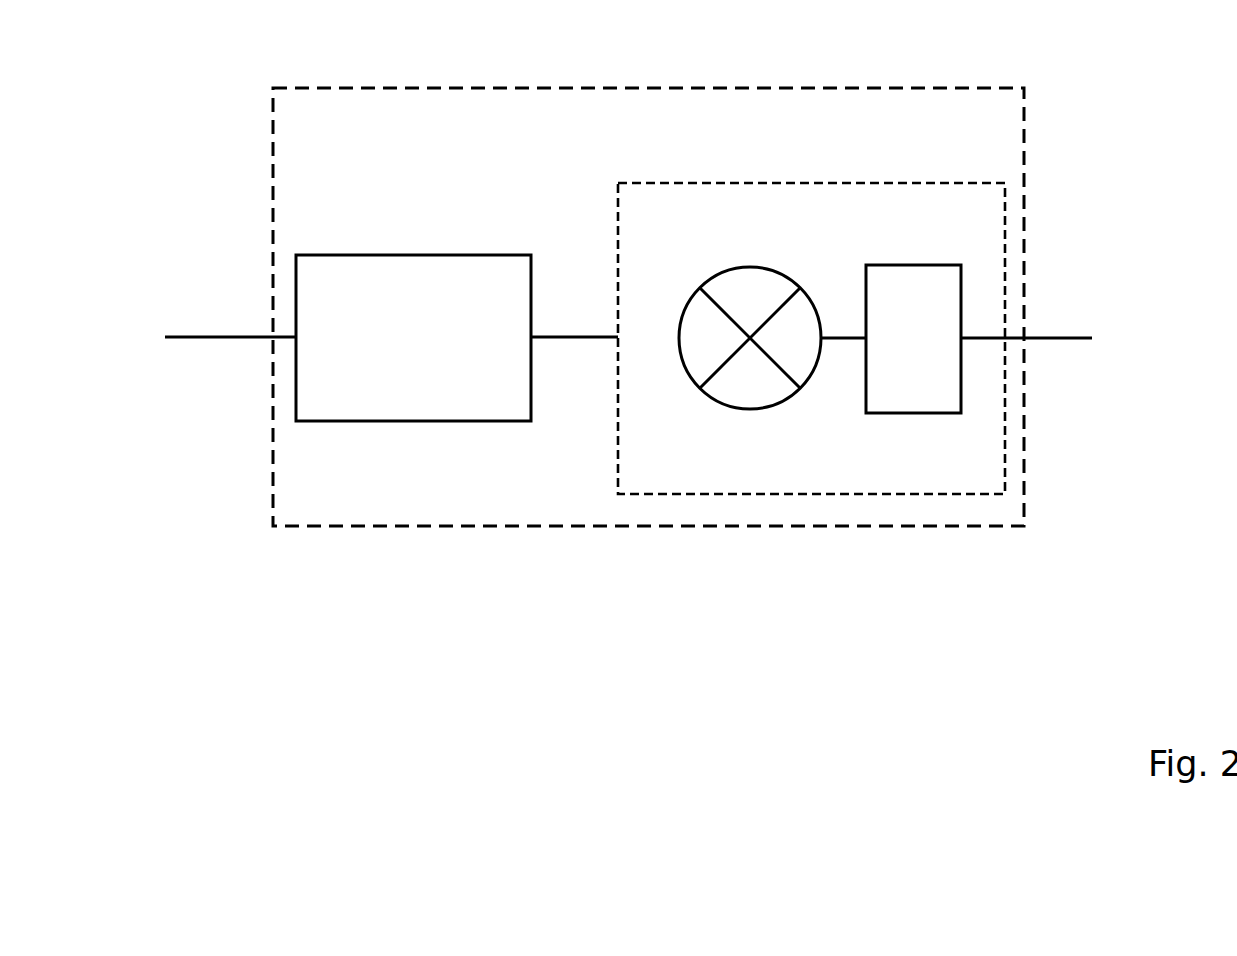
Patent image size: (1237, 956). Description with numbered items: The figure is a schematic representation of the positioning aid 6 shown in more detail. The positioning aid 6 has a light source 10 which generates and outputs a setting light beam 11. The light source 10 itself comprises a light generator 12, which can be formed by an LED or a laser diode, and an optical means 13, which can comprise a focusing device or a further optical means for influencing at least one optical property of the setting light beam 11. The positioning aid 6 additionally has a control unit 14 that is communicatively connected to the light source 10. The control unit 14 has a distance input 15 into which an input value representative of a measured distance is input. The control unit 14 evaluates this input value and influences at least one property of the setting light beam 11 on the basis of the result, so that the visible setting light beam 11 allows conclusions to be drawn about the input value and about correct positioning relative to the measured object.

The positioning aid 6 is at (320, 139).
The light source 10 is at (667, 226).
The setting light beam 11 is at (1053, 336).
The light generator 12 is at (737, 387).
The optical means 13 is at (932, 354).
The control unit 14 is at (432, 356).
The distance input 15 is at (296, 336).